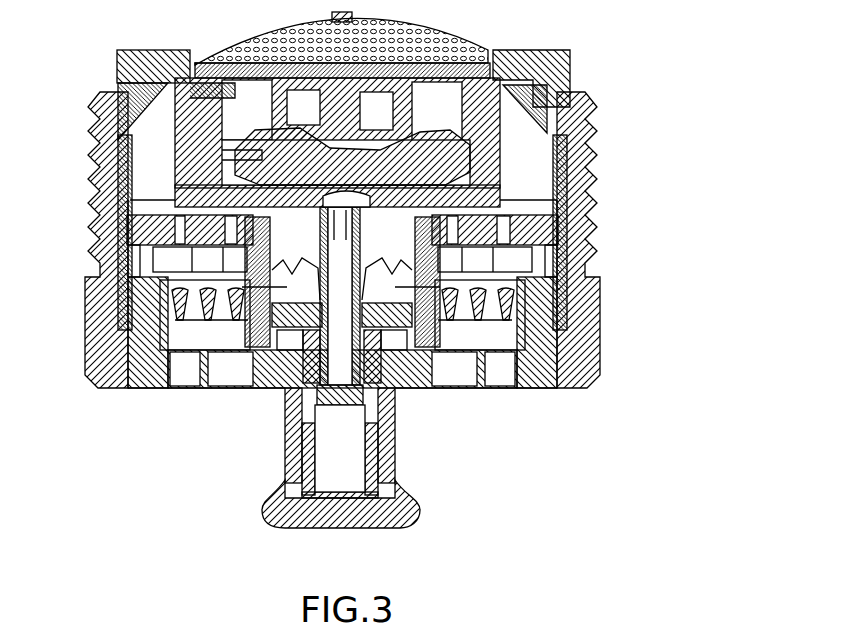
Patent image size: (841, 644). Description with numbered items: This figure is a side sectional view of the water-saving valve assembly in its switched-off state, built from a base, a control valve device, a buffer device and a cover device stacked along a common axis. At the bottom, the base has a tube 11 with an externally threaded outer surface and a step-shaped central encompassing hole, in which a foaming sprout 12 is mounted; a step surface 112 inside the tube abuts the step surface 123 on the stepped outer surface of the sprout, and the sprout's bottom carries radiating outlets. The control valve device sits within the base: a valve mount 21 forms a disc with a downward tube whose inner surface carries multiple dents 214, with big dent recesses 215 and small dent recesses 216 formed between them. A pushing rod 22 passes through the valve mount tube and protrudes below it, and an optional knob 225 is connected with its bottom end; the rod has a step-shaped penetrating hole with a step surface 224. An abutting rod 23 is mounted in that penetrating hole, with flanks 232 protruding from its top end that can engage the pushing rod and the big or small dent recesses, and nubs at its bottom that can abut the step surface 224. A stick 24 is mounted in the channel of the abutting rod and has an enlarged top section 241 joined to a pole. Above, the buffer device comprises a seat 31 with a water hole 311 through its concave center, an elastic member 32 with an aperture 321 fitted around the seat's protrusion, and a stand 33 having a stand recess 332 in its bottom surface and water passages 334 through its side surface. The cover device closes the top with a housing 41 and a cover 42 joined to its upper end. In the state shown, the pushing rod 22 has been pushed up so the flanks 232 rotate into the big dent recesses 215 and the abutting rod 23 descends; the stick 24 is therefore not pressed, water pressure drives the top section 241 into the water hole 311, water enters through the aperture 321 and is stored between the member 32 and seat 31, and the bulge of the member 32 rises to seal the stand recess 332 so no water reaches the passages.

The tube 11 is at (580, 372).
The foaming sprout 12 is at (530, 378).
The valve mount 21 is at (525, 228).
The pushing rod 22 is at (302, 400).
The abutting rod 23 is at (337, 407).
The stick 24 is at (343, 330).
The seat 31 is at (497, 165).
The member 32 is at (412, 155).
The stand 33 is at (197, 80).
The housing 41 is at (555, 122).
The cover 42 is at (547, 63).
The step surface 112 is at (558, 283).
The step surface 123 is at (565, 283).
The dents 214 is at (395, 287).
The big dent recesses 215 is at (280, 272).
The small dent recesses 216 is at (440, 250).
The step surface 224 is at (368, 388).
The knob 225 is at (383, 522).
The flanks 232 is at (410, 317).
The top section 241 is at (342, 195).
The water hole 311 is at (300, 237).
The aperture 321 is at (262, 152).
The stand recess 332 is at (430, 52).
The water passage 334 is at (378, 100).